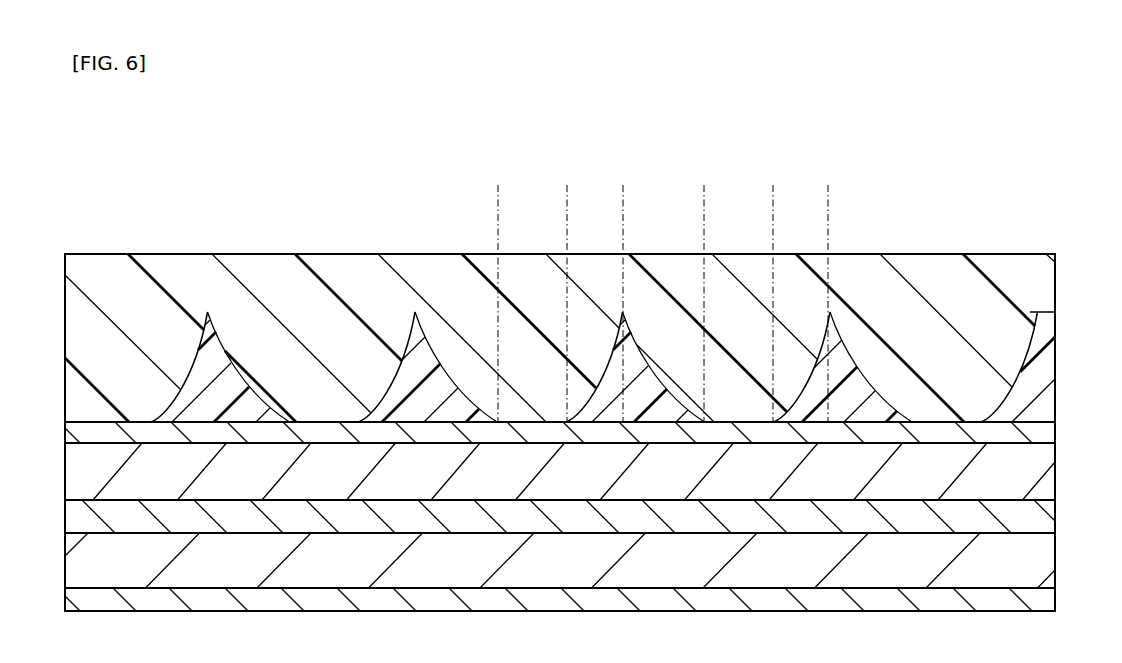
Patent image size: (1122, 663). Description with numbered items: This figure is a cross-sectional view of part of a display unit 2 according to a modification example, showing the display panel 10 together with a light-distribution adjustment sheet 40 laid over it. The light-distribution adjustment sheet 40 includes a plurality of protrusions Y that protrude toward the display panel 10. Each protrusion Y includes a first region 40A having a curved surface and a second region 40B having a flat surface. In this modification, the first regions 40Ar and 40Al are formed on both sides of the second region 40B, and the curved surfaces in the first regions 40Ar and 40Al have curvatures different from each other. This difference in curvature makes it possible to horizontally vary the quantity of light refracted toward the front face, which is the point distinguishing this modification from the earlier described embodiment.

The display unit 2 is at (1006, 154).
The light-distribution adjustment sheet 40 is at (1056, 281).
The first region 40A is at (568, 138).
The first region 40Ar is at (621, 182).
The first region 40Al is at (702, 182).
The second region 40B is at (771, 182).
The protrusion Y is at (1028, 364).
The display panel 10 is at (1062, 421).